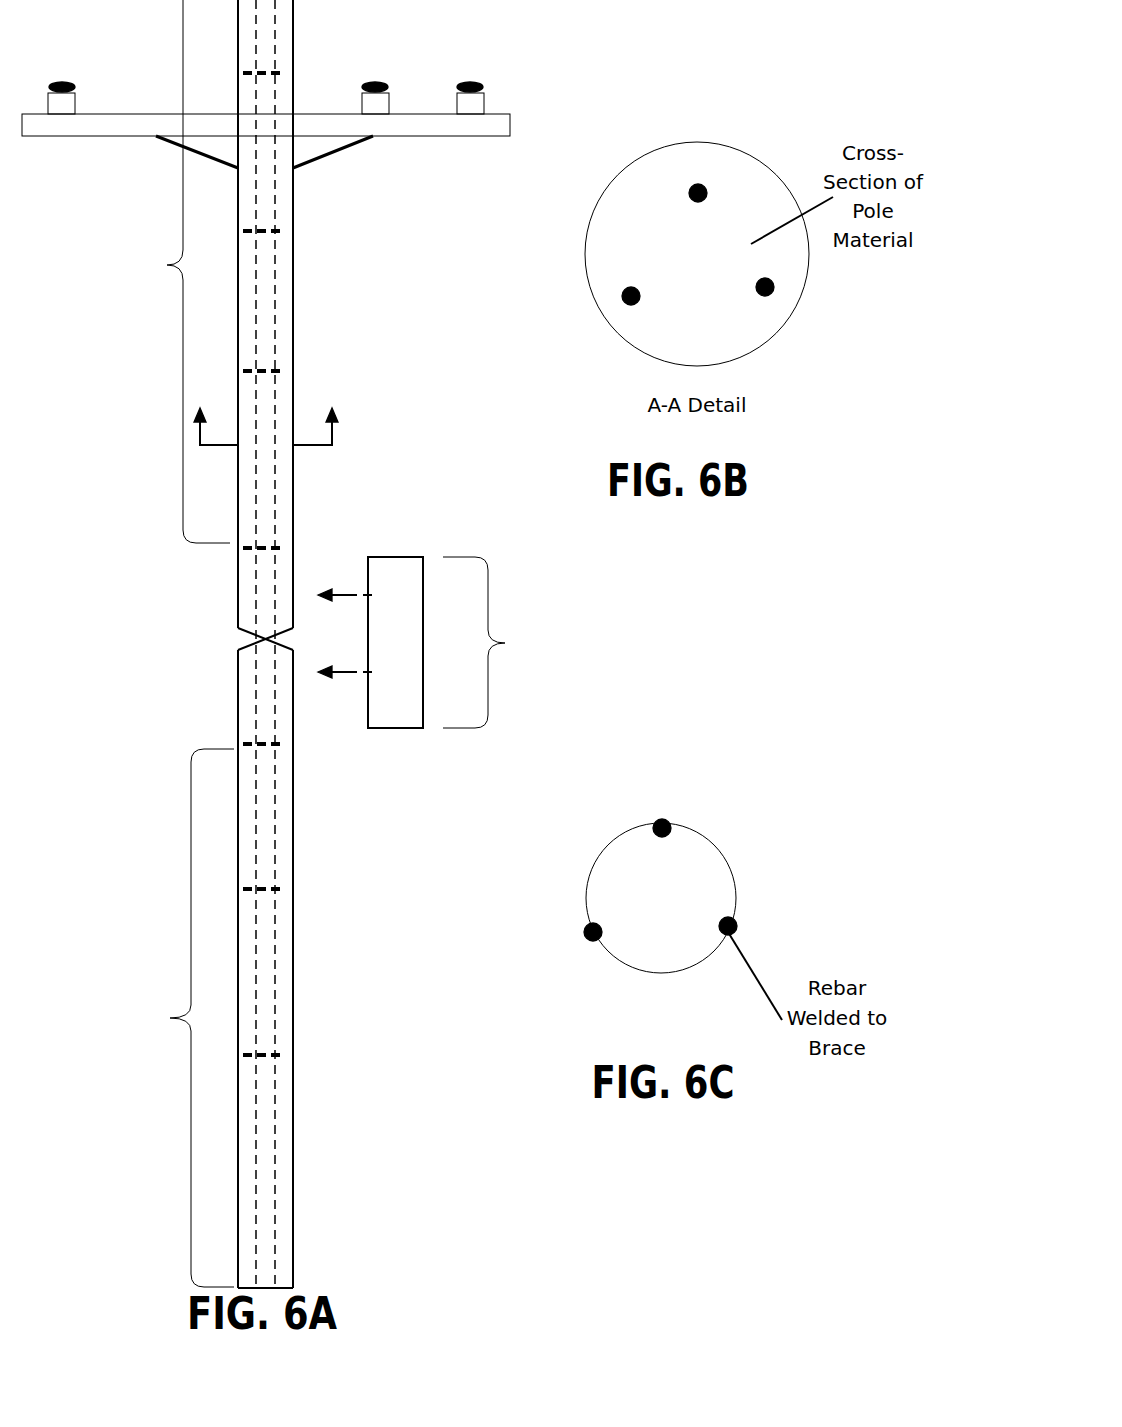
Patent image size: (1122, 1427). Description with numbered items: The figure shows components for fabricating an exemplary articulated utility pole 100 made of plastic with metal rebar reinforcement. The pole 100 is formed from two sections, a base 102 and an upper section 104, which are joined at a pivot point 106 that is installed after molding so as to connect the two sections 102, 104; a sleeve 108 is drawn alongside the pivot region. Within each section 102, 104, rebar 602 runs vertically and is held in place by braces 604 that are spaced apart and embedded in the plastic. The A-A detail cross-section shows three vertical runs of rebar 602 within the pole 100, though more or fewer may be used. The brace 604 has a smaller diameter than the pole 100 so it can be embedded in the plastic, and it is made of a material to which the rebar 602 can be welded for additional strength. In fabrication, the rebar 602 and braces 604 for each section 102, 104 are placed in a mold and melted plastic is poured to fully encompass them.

In FIG. 6A, the articulated utility pole 100 is at (317, 644).
In FIG. 6A, the base section 102 is at (188, 969).
In FIG. 6A, the upper section 104 is at (202, 314).
In FIG. 6A, the pivot point 106 is at (255, 641).
In FIG. 6A, the sleeve 108 is at (460, 642).
In FIG. 6A, the rebar 602 is at (276, 310).
In FIG. 6B, the rebar 602 is at (702, 187).
In FIG. 6C, the rebar 602 is at (660, 816).
In FIG. 6A, the brace 604 is at (287, 231).
In FIG. 6C, the brace 604 is at (699, 875).